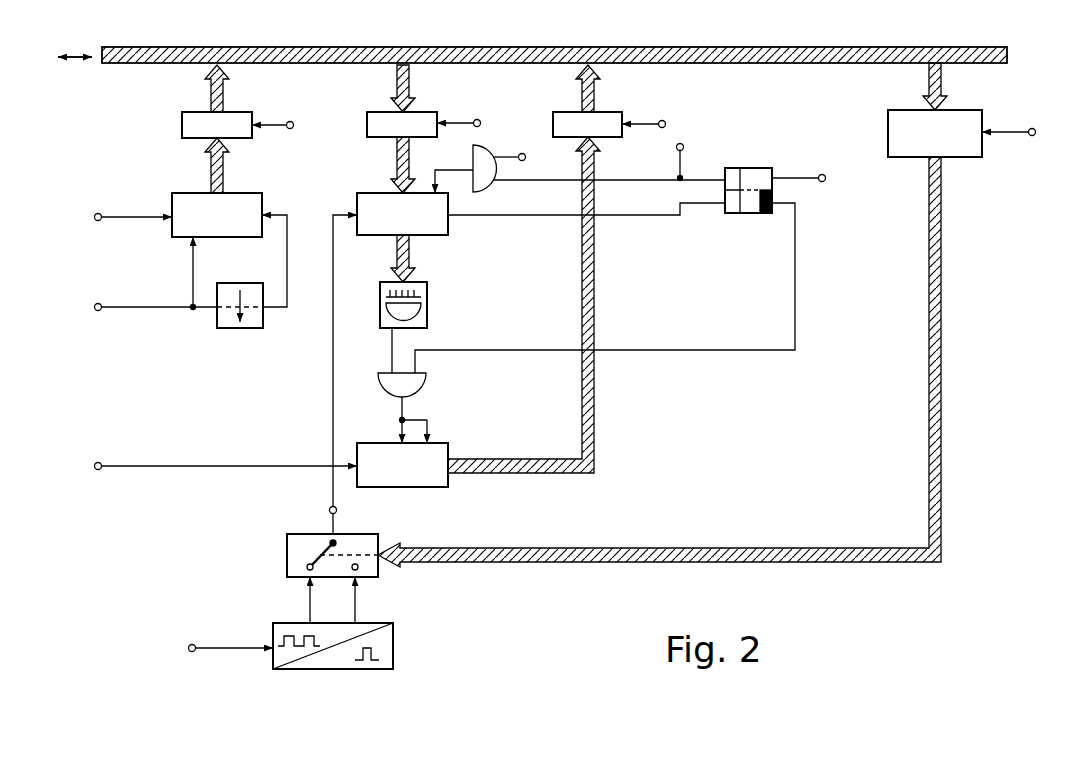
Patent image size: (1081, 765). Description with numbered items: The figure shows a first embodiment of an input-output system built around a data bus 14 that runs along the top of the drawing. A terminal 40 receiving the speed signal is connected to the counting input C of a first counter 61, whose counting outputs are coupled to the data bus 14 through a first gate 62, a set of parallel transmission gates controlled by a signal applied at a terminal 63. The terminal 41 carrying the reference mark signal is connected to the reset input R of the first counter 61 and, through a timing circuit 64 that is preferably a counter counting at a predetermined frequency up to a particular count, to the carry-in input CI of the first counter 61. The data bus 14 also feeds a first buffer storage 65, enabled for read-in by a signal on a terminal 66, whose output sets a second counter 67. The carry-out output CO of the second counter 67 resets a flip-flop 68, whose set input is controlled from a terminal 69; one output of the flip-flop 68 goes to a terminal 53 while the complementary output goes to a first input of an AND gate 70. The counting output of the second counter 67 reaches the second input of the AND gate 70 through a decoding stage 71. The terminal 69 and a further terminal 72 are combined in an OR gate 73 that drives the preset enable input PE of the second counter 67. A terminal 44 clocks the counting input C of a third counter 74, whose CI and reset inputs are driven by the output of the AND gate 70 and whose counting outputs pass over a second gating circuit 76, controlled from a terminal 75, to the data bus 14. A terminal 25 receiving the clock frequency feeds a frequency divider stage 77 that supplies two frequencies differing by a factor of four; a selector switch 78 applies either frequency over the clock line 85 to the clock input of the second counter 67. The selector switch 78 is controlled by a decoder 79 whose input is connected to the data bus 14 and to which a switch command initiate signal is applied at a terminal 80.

The data bus 14 is at (986, 52).
The first gate 62 is at (200, 122).
The terminal 63 is at (290, 121).
The first counter 61 is at (200, 200).
The terminal 40 is at (97, 213).
The reset input 41 is at (97, 303).
The timing circuit 64 is at (243, 292).
The first buffer storage 65 is at (382, 120).
The terminal 66 is at (477, 119).
The second counter 67 is at (382, 200).
The OR gate 73 is at (483, 166).
The further terminal 72 is at (528, 141).
The second gating circuit 76 is at (570, 120).
The terminal 75 is at (662, 120).
The terminal 69 is at (683, 144).
The flip-flop 68 is at (748, 178).
The terminal 53 is at (825, 175).
The decoder 79 is at (898, 127).
The terminal 80 is at (1034, 136).
The decoding stage 71 is at (420, 296).
The AND gate 70 is at (410, 384).
The third counter 74 is at (410, 472).
The terminal 44 is at (97, 462).
The switch control line 85 is at (329, 510).
The selector switch 78 is at (297, 548).
The frequency divider stage 77 is at (382, 640).
The terminal 25 is at (192, 644).